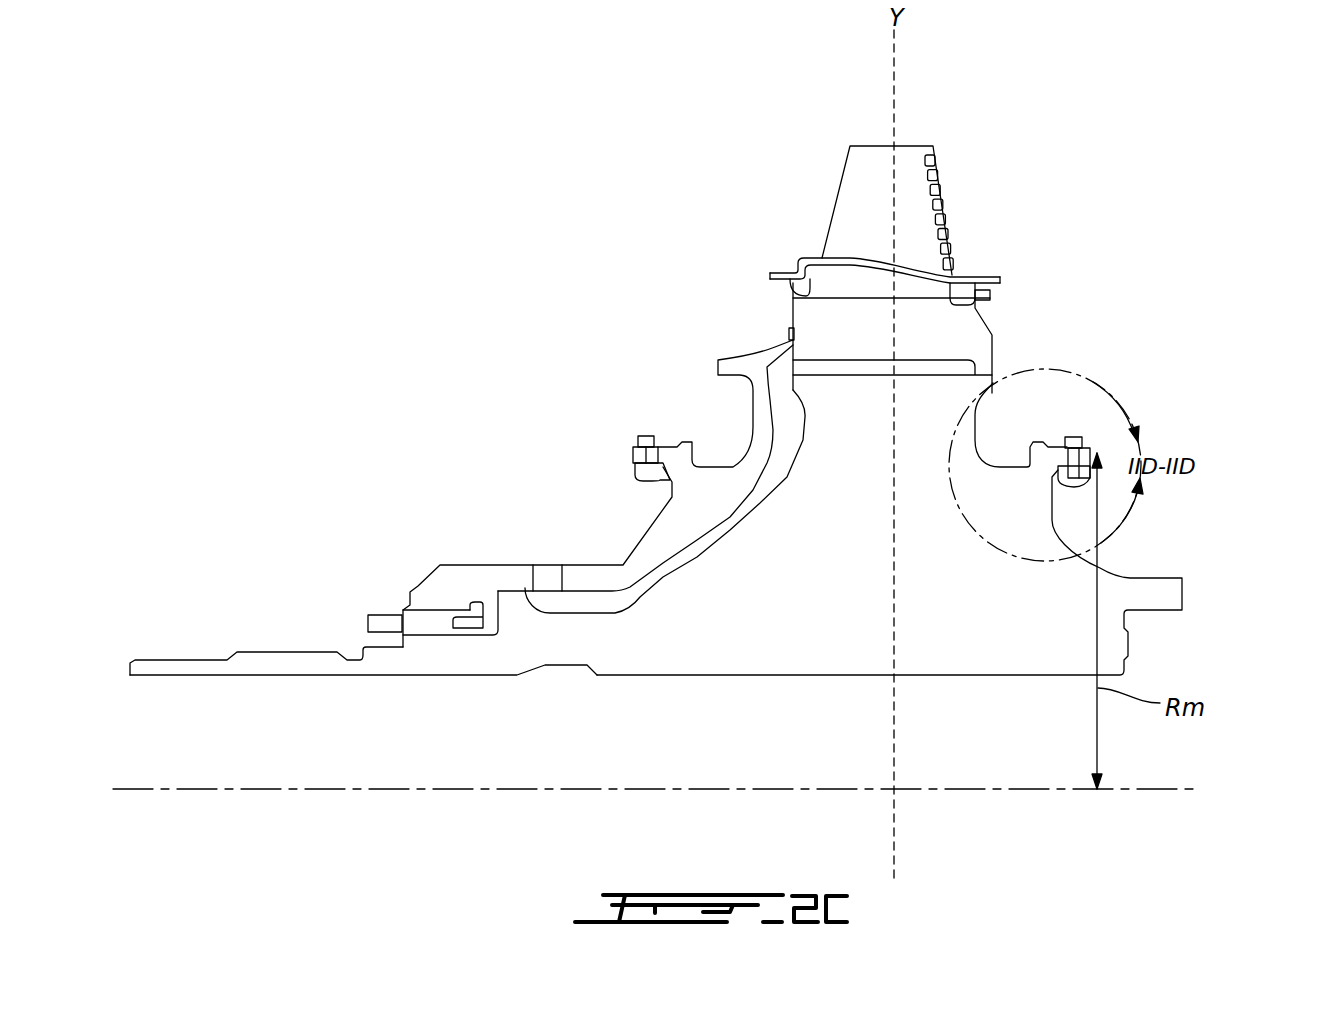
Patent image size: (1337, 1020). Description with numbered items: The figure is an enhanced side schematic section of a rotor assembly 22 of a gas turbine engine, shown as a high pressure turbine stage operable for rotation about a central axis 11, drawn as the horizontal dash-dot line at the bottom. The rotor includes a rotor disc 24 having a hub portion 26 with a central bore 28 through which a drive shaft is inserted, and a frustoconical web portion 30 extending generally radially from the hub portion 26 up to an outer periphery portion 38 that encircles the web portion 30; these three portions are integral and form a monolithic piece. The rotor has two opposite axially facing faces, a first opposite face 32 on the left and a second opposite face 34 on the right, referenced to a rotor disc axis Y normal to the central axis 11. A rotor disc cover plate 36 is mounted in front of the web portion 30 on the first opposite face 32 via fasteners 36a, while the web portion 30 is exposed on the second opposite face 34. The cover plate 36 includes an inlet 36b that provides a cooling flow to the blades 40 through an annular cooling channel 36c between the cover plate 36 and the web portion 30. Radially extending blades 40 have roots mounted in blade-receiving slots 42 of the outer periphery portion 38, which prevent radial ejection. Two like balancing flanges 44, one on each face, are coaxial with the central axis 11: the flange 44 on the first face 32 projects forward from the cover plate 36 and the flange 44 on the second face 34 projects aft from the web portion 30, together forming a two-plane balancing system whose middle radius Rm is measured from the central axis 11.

The central axis 11 is at (192, 790).
The rotor assembly 22 is at (298, 174).
The rotor disc 24 is at (1030, 255).
The hub portion 26 is at (160, 668).
The central bore 28 is at (1192, 738).
The frustoconical web portion 30 is at (693, 570).
The first opposite face 32 is at (577, 401).
The second opposite face 34 is at (1167, 381).
The rotor disc cover plate 36 is at (667, 540).
The fasteners 36a is at (418, 625).
The inlet 36b is at (547, 573).
The annular cooling channel 36c is at (606, 597).
The outer periphery portion 38 is at (742, 256).
The blades 40 is at (868, 183).
The blade-receiving slots 42 is at (905, 343).
The flange 44 is at (652, 396).